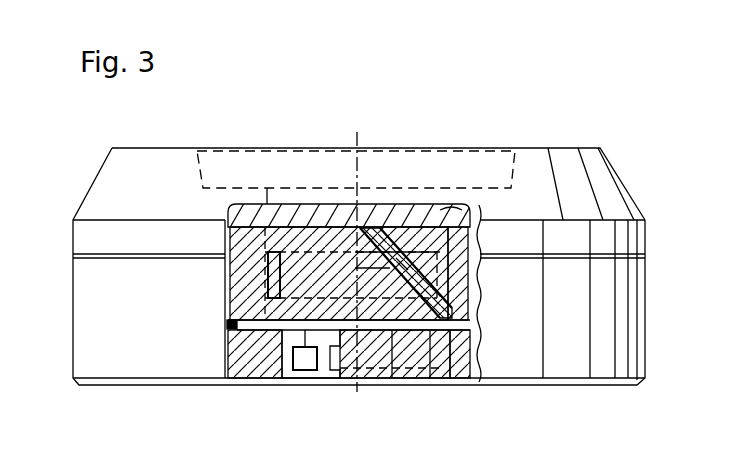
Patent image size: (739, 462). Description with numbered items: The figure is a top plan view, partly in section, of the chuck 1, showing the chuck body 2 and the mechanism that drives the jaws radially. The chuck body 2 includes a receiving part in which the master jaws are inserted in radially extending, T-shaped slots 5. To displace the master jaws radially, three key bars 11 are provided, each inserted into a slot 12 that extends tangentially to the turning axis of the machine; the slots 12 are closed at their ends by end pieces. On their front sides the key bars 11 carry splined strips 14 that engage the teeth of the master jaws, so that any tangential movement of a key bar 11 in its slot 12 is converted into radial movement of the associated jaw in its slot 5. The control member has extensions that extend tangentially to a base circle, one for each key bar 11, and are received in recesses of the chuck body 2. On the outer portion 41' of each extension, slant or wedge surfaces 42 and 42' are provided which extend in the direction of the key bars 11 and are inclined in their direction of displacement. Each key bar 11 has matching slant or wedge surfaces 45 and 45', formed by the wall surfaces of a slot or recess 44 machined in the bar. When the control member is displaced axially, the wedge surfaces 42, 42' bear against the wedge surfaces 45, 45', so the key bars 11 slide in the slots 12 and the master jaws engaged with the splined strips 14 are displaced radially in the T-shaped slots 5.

The chuck 1 is at (545, 112).
The chuck body 2 is at (407, 377).
The T-shaped slots 5 is at (320, 378).
The key bars 11 is at (283, 208).
The slots 12 is at (242, 208).
The splined strips 14 is at (358, 372).
The outer portion of extension 41' is at (449, 204).
The slant or wedge surface 42 is at (466, 379).
The slant or wedge surface 42' is at (472, 149).
The slot or recess 44 is at (373, 208).
The slant or wedge surface 45 is at (376, 203).
The slant or wedge surface 45' is at (405, 179).